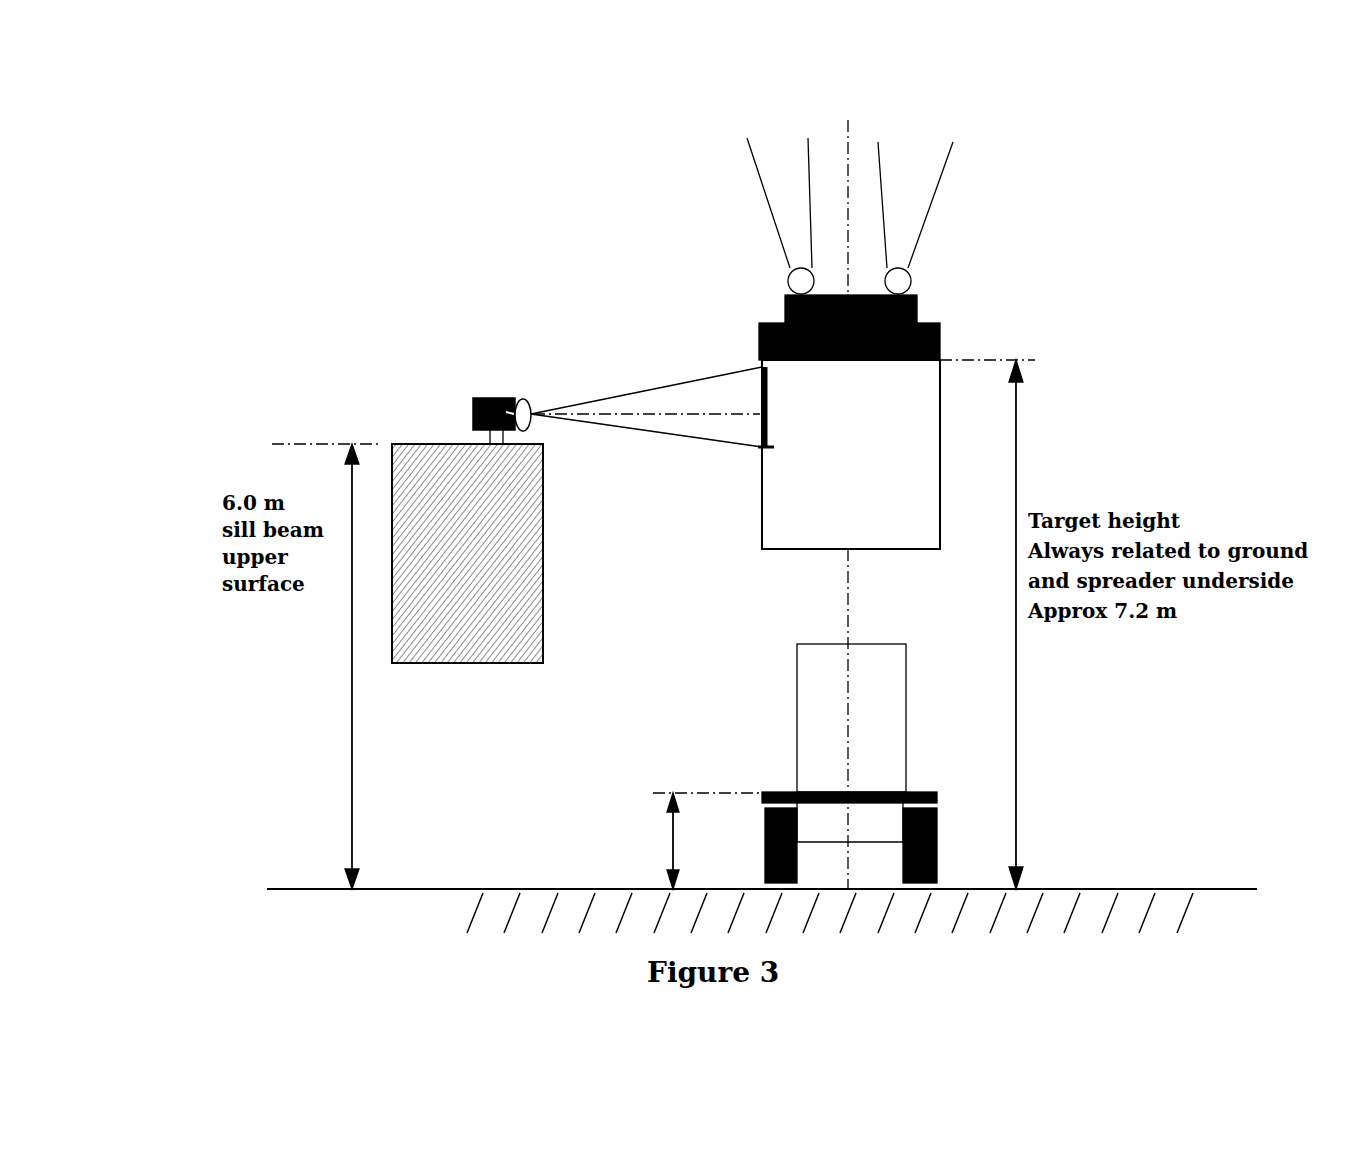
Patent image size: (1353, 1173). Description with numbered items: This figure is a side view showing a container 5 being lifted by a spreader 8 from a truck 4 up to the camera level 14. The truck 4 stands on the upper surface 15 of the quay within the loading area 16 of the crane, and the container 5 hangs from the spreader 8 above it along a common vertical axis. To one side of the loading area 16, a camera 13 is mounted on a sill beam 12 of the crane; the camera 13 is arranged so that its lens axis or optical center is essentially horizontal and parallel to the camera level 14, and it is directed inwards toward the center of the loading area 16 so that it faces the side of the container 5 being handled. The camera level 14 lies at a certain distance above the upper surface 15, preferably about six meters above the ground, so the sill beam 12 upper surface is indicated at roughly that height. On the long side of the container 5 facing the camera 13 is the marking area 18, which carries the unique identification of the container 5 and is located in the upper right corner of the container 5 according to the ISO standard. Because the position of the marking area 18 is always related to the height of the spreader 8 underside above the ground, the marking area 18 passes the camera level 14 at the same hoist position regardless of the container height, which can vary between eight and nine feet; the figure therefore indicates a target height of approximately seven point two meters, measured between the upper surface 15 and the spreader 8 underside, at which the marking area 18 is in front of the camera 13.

The truck 4 is at (920, 734).
The container 5 is at (851, 454).
The spreader 8 is at (958, 330).
The sill beam 12 is at (467, 553).
The camera 13 is at (473, 412).
The camera level 14 is at (630, 417).
The upper surface of the quay 15 is at (507, 889).
The loading area 16 is at (667, 823).
The marking area 18 is at (758, 397).